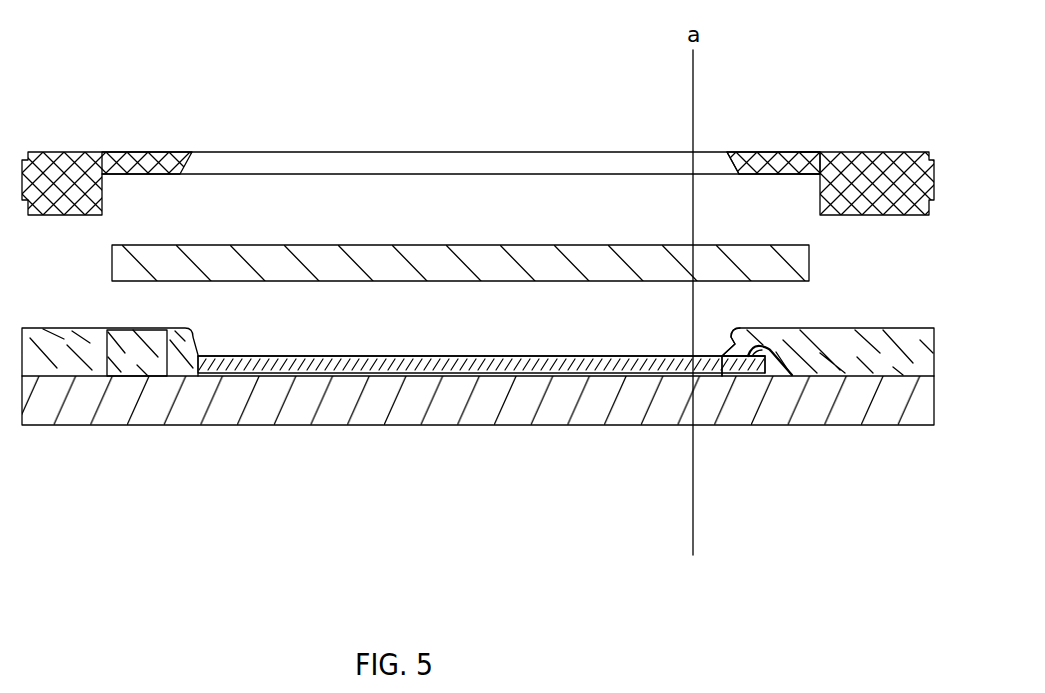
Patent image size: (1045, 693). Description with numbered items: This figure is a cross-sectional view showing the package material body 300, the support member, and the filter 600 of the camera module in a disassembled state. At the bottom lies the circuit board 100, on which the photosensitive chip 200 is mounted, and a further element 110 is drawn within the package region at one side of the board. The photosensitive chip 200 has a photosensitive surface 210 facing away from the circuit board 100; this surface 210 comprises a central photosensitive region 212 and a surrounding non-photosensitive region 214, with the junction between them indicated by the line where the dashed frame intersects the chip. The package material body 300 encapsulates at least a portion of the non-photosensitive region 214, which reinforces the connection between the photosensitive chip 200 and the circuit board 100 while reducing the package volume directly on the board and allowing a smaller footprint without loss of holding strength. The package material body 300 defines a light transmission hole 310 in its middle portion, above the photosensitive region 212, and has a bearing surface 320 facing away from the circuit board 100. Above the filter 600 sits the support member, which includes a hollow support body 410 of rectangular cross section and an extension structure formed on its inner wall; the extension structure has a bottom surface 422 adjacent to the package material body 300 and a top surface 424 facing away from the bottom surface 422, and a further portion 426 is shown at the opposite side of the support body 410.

The circuit board 100 is at (518, 400).
The pad 110 is at (157, 348).
The photosensitive chip 200 is at (347, 372).
The photosensitive surface 210 is at (729, 439).
The photosensitive region 212 is at (654, 377).
The non-photosensitive region 214 is at (712, 377).
The package material body 300 is at (862, 362).
The light transmission hole 310 is at (461, 341).
The bearing surface 320 is at (798, 330).
The support body 410 is at (48, 176).
The bottom surface 422 is at (812, 152).
The top surface 424 is at (788, 152).
The bonding portion 426 is at (172, 152).
The filter 600 is at (323, 263).